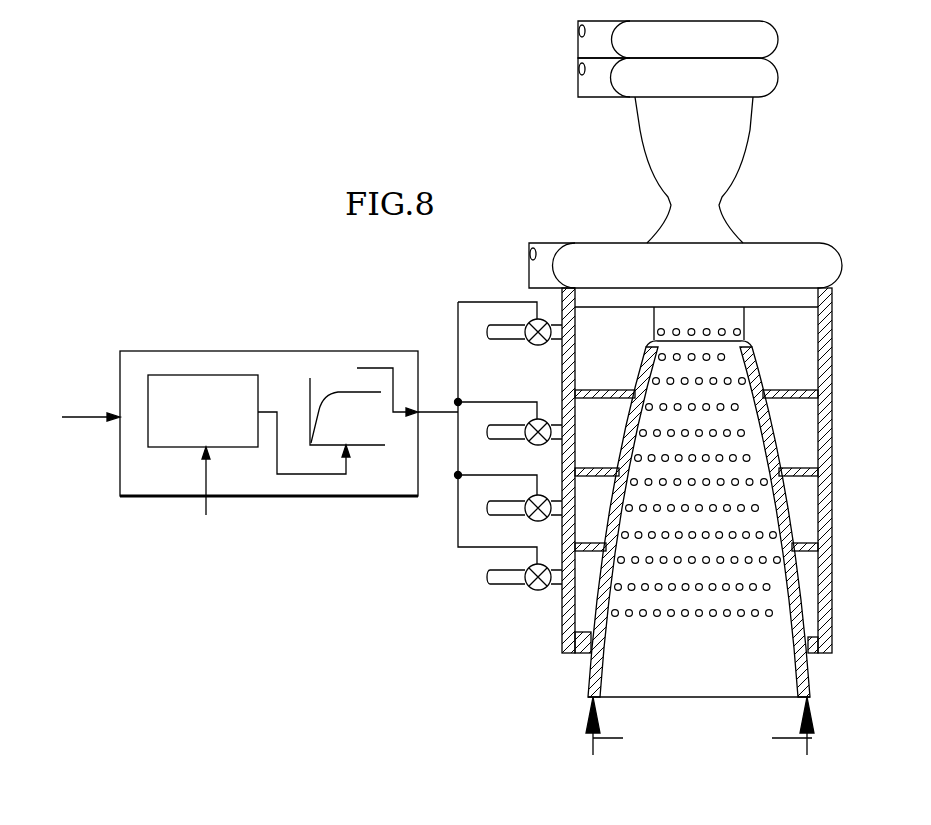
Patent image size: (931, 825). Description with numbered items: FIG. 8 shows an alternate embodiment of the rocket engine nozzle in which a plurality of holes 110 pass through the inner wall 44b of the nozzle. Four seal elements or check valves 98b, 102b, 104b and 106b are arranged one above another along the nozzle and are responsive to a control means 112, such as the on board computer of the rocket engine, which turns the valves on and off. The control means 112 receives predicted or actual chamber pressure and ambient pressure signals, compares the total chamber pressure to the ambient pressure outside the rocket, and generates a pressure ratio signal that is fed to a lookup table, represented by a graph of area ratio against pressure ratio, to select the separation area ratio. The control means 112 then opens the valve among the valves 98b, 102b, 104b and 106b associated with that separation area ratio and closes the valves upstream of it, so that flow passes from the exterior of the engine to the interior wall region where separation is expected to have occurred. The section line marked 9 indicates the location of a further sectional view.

The control means 112 is at (250, 351).
The valve 98b is at (529, 341).
The valve 102b is at (529, 441).
The valve 104b is at (529, 517).
The valve 106b is at (529, 586).
The holes 110 is at (735, 376).
The inner wall 44b is at (793, 438).
The section line 9- 9 is at (701, 745).